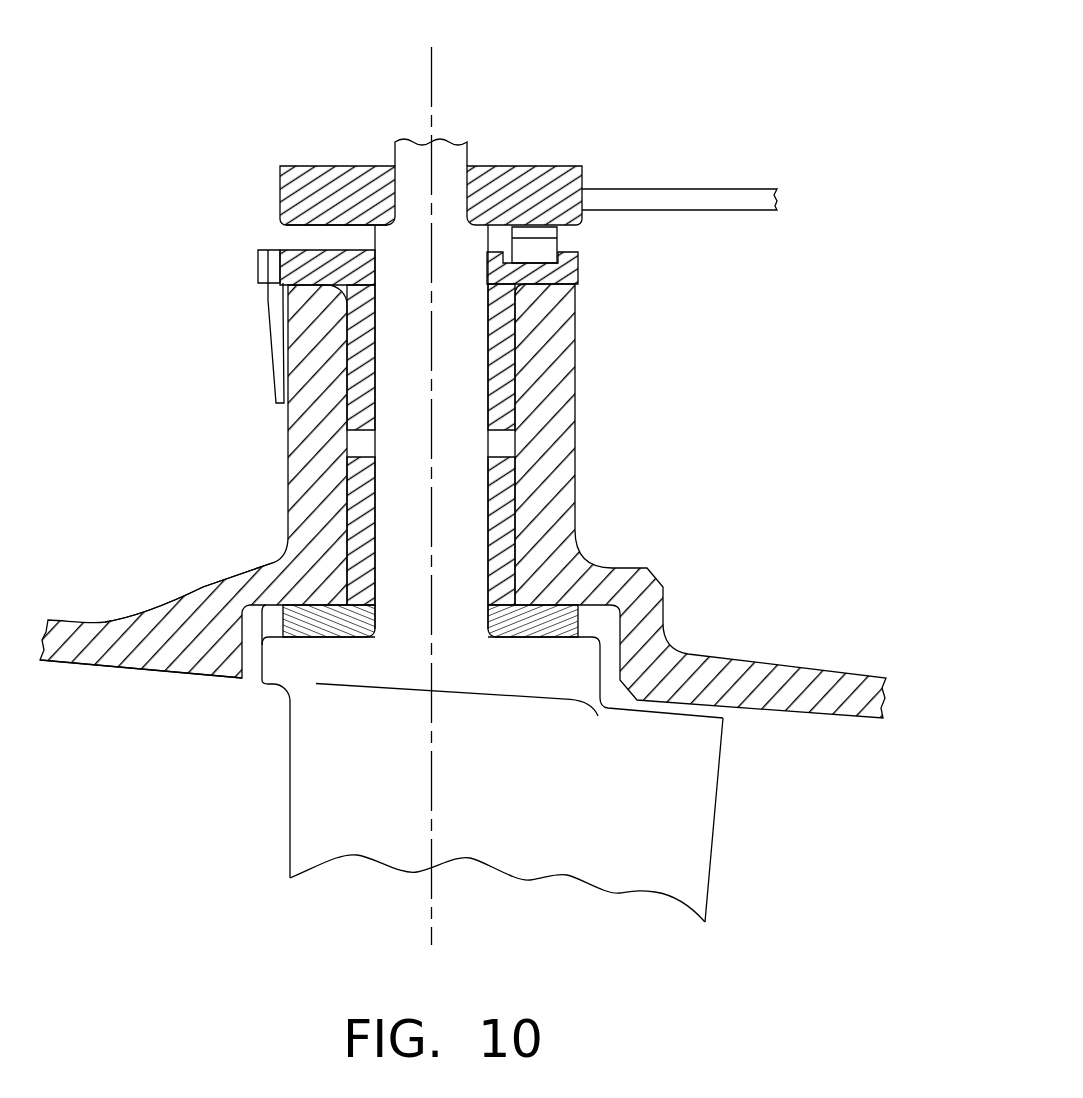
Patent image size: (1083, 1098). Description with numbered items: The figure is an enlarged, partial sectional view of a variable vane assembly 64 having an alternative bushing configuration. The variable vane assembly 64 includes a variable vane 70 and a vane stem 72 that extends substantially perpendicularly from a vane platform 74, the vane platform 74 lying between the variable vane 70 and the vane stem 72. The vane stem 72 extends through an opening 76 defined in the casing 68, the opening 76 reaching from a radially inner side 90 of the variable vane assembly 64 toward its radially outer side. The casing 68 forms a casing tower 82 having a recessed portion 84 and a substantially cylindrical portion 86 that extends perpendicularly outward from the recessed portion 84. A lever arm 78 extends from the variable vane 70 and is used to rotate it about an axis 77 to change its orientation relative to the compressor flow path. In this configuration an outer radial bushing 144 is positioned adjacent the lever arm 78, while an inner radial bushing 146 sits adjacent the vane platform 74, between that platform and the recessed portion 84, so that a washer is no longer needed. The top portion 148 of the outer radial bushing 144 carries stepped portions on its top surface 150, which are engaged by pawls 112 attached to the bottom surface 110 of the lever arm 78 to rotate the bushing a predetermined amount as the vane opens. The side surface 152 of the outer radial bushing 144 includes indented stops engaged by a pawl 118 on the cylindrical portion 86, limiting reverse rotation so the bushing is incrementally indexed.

The variable vane assembly 64 is at (650, 62).
The casing 68 is at (776, 677).
The variable vane 70 is at (616, 822).
The vane stem 72 is at (473, 390).
The vane platform 74 is at (588, 673).
The opening 76 is at (247, 684).
The axis 77 is at (433, 69).
The lever arm 78 is at (555, 178).
The casing tower 82 is at (198, 582).
The recessed portion 84 is at (208, 643).
The cylindrical portion 86 is at (305, 467).
The radially inner side 90 is at (750, 745).
The bottom surface 110 is at (303, 232).
The pawl 112 is at (537, 252).
The pawl 118 is at (270, 338).
The outer radial bushing 144 is at (507, 340).
The inner radial bushing 146 is at (507, 511).
The top portion 148 is at (585, 270).
The top surface 150 is at (297, 249).
The side surface 152 is at (280, 265).